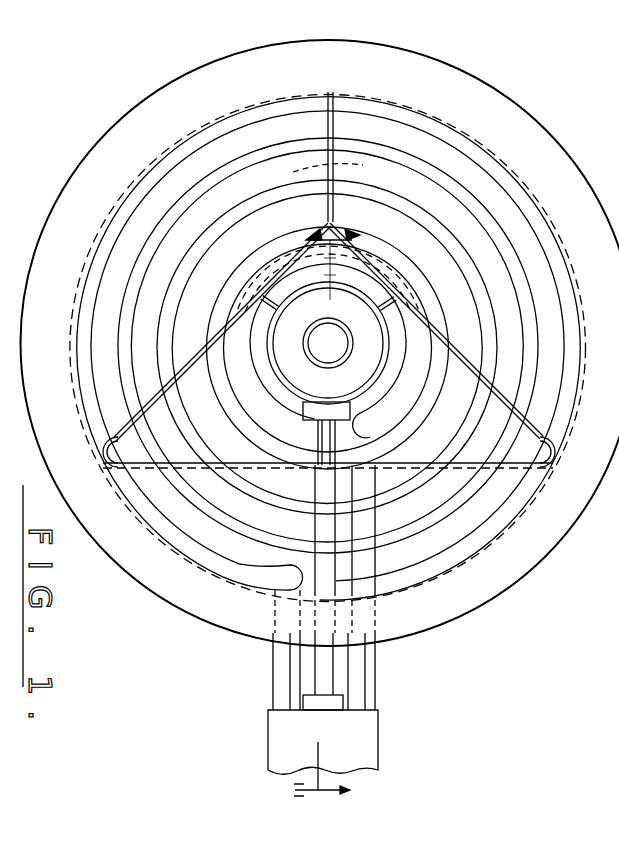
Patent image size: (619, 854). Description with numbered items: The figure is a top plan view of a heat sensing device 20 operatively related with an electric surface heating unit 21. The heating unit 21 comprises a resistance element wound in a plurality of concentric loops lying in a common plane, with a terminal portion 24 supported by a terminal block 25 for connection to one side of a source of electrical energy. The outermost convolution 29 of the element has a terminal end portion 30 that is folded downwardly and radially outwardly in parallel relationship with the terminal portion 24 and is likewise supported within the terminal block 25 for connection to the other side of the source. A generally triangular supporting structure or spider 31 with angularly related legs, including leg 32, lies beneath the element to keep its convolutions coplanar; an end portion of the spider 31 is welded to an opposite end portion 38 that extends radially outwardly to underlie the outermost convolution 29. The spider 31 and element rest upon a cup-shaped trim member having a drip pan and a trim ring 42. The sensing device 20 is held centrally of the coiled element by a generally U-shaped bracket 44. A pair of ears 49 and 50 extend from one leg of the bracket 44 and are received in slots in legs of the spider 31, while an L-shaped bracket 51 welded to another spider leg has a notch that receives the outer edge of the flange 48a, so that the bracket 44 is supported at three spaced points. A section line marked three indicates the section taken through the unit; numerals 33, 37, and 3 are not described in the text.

The heat sensing device 20 is at (395, 370).
The electric surface heating unit 21 is at (519, 600).
The terminal portion 24 is at (366, 677).
The terminal block 25 is at (272, 755).
The outermost convolution 29 is at (176, 525).
The terminal end portion 30 is at (276, 675).
The spider 31 is at (552, 482).
The leg 32 is at (334, 162).
The bracket arm 33 is at (172, 348).
The hidden support member 37 is at (452, 336).
The opposite end portion 38 is at (310, 157).
The trim ring 42 is at (393, 562).
The U-shaped bracket 44 is at (264, 471).
The flange 48a is at (341, 406).
The ear 49 is at (390, 272).
The ear 50 is at (305, 350).
The L-shaped bracket 51 is at (303, 404).
The section line 3- 3 is at (338, 500).